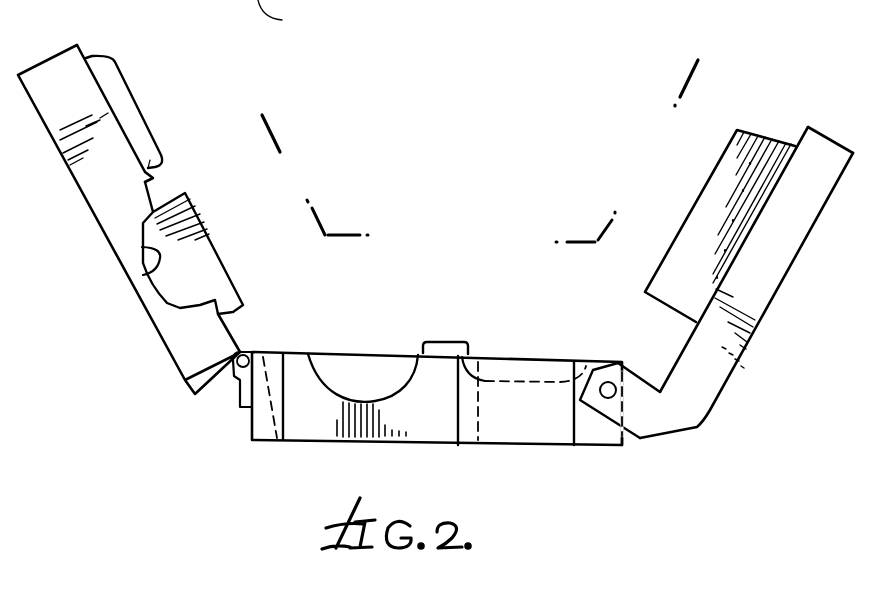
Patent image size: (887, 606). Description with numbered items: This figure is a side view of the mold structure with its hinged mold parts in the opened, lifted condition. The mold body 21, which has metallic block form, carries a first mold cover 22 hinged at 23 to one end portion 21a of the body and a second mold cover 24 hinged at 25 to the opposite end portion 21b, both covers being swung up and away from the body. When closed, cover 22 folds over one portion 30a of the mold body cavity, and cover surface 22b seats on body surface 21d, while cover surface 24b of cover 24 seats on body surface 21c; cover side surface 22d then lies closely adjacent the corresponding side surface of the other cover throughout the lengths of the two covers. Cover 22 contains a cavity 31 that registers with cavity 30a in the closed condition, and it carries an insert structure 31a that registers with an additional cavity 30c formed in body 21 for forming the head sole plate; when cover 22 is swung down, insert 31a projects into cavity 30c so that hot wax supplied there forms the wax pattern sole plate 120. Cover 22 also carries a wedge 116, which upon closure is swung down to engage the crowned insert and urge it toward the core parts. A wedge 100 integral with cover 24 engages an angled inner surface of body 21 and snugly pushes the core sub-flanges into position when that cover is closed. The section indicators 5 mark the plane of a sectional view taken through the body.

The section line 5- 5 is at (276, 117).
The mold body 21 is at (326, 450).
The end portion of body 21a is at (260, 427).
The opposite end portion of body 21b is at (612, 438).
The body surface 21c is at (293, 355).
The body surface 21d is at (589, 362).
The first mold cover 22 is at (137, 320).
The cover surface 22b is at (118, 112).
The cover side surface 22d is at (80, 52).
The hinge connection 23 is at (227, 382).
The second mold cover 24 is at (792, 278).
The cover surface 24b is at (805, 127).
The hinge connection 25 is at (608, 399).
The portion of mold body cavity 30a is at (405, 358).
The additional mold body cavity 30c is at (515, 378).
The cavity 31 is at (143, 253).
The sole plate forming insert 31a is at (150, 147).
The wedge 100 is at (714, 170).
The wedge 116 is at (210, 232).
The wax pattern sole plate 120 is at (282, 20).